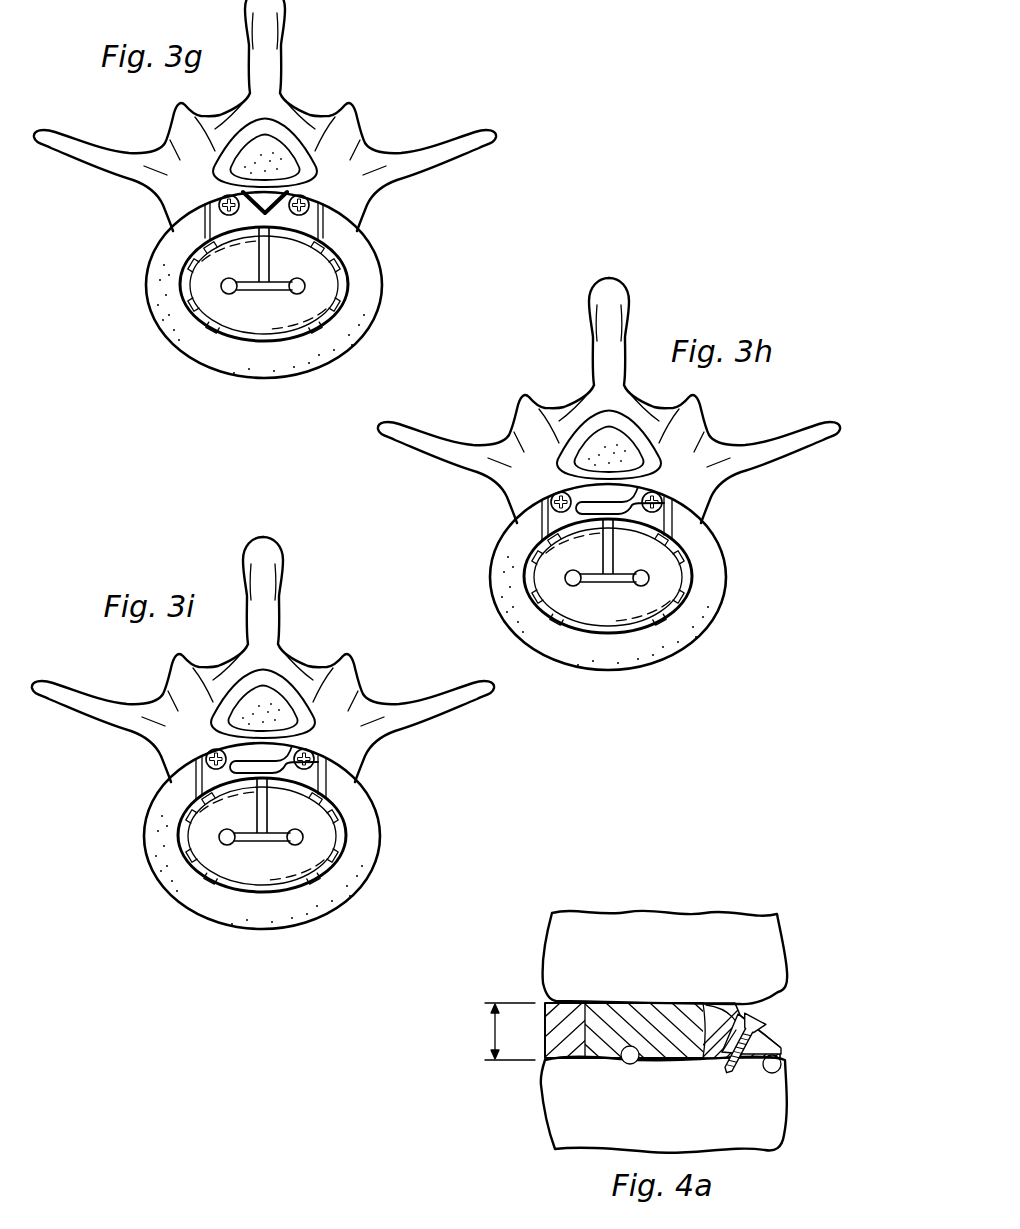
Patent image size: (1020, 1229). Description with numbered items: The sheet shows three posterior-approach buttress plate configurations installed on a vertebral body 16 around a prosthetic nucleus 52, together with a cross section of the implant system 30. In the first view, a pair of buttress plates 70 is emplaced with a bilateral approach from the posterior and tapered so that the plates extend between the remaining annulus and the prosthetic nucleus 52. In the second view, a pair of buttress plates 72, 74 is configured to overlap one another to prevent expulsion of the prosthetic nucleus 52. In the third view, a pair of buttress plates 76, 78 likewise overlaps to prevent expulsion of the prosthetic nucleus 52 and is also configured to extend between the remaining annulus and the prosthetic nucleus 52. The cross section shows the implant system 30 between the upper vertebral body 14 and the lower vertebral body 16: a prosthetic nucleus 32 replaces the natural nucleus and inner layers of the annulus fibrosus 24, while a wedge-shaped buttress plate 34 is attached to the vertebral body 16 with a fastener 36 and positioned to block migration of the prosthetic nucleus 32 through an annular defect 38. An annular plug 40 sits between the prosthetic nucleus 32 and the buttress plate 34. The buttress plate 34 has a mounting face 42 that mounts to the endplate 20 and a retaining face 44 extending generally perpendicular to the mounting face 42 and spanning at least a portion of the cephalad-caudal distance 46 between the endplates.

In FIG. 4A, the vertebral body 14 is at (543, 963).
In FIG. 3G, the vertebral body 16 is at (265, 157).
In FIG. 3H, the vertebral body 16 is at (609, 442).
In FIG. 3I, the vertebral body 16 is at (263, 701).
In FIG. 4A, the vertebral body 16 is at (541, 1100).
In FIG. 4A, the vertebral endplate 20 is at (630, 1064).
In FIG. 3G, the annulus fibrosus 24 is at (276, 285).
In FIG. 3H, the annulus fibrosus 24 is at (619, 577).
In FIG. 3I, the annulus fibrosus 24 is at (273, 836).
In FIG. 4A, the annulus fibrosus 24 is at (545, 1055).
In FIG. 4A, the implant system 30 is at (738, 881).
In FIG. 4A, the prosthetic nucleus 32 is at (664, 1005).
In FIG. 4A, the buttress plate 34 is at (779, 1045).
In FIG. 4A, the fastener 36 is at (748, 1067).
In FIG. 4A, the annular defect 38 is at (777, 1049).
In FIG. 4A, the annular plug 40 is at (722, 1055).
In FIG. 4A, the mounting face 42 is at (782, 1064).
In FIG. 4A, the retaining face 44 is at (719, 1010).
In FIG. 4A, the cephalad-caudal distance 46 is at (490, 1030).
In FIG. 3G, the prosthetic nucleus 52 is at (264, 323).
In FIG. 3H, the prosthetic nucleus 52 is at (608, 616).
In FIG. 3I, the prosthetic nucleus 52 is at (262, 874).
In FIG. 3G, the buttress plates 70 is at (255, 197).
In FIG. 3H, the buttress plate 72 is at (597, 493).
In FIG. 3H, the buttress plate 74 is at (667, 479).
In FIG. 3I, the buttress plate 76 is at (252, 753).
In FIG. 3I, the buttress plate 78 is at (320, 738).